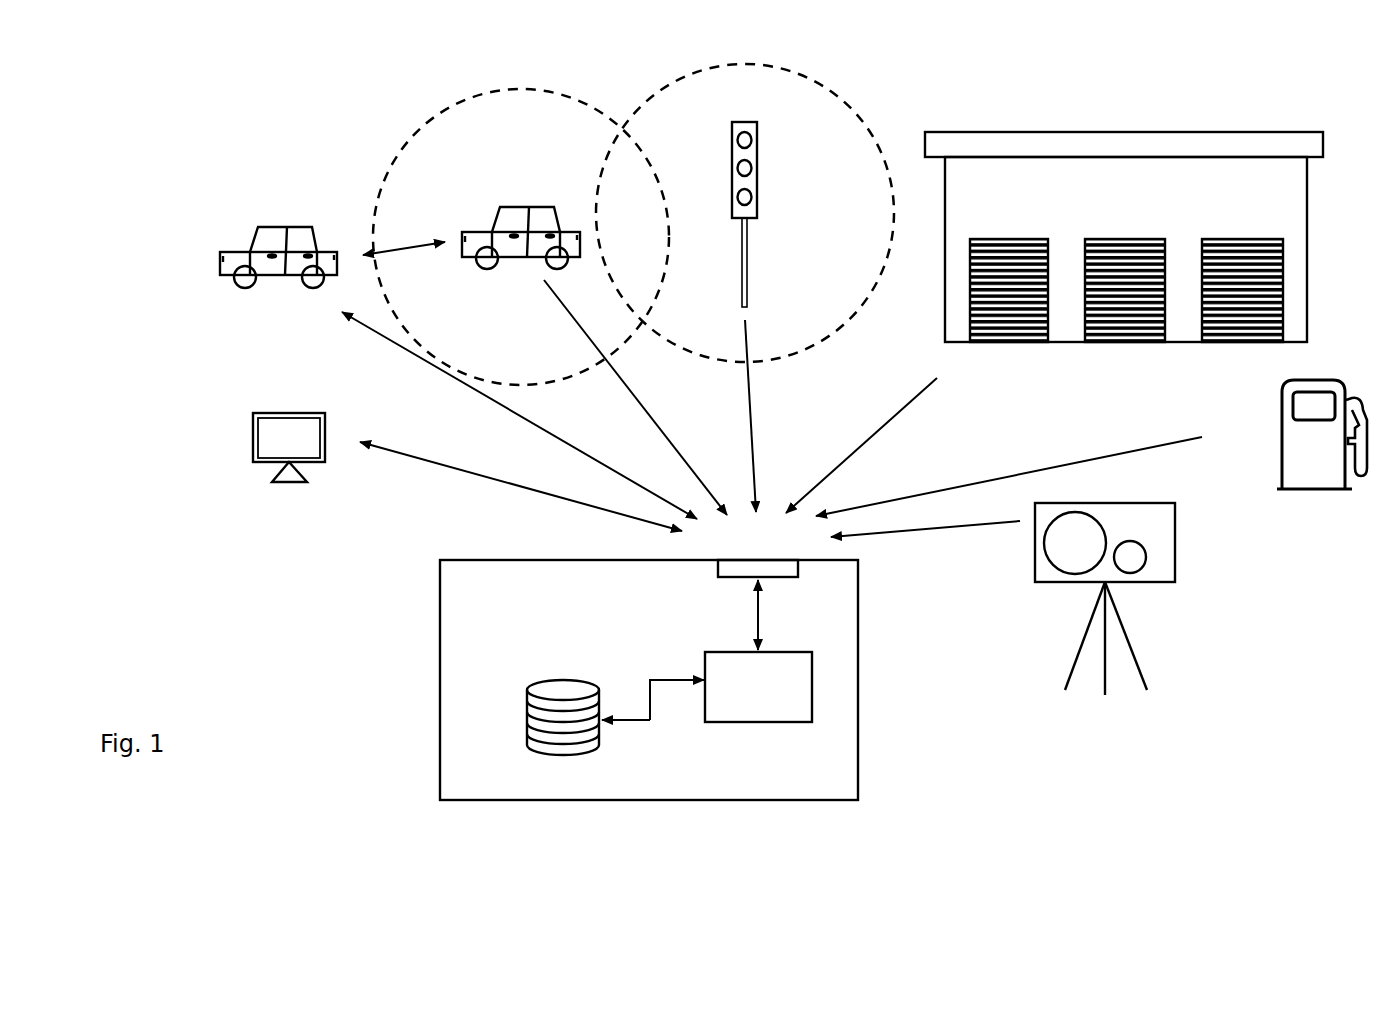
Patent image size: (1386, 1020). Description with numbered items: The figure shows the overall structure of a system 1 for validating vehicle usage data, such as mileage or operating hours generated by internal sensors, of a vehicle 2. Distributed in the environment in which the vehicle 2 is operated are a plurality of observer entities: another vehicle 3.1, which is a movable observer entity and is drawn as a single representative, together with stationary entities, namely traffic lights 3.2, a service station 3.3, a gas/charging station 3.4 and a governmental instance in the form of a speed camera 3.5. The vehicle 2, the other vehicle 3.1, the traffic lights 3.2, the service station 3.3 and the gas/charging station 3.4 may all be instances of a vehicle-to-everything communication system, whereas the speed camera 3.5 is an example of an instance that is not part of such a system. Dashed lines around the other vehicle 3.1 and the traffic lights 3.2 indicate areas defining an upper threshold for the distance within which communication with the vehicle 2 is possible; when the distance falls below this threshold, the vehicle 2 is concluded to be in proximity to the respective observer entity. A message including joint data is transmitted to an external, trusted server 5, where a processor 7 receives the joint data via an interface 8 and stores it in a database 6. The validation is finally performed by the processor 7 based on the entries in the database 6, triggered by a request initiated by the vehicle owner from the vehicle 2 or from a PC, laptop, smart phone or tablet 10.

The system 1 is at (1308, 712).
The vehicle 2 is at (235, 257).
The other vehicle 3.1 is at (493, 242).
The traffic lights 3.2 is at (757, 168).
The service station 3.3 is at (1063, 170).
The gas/charging station 3.4 is at (1292, 435).
The speed camera 3.5 is at (1168, 557).
The external, trusted server 5 is at (457, 705).
The database 6 is at (558, 687).
The processor 7 is at (762, 703).
The interface 8 is at (743, 567).
The tablet 10 is at (259, 447).